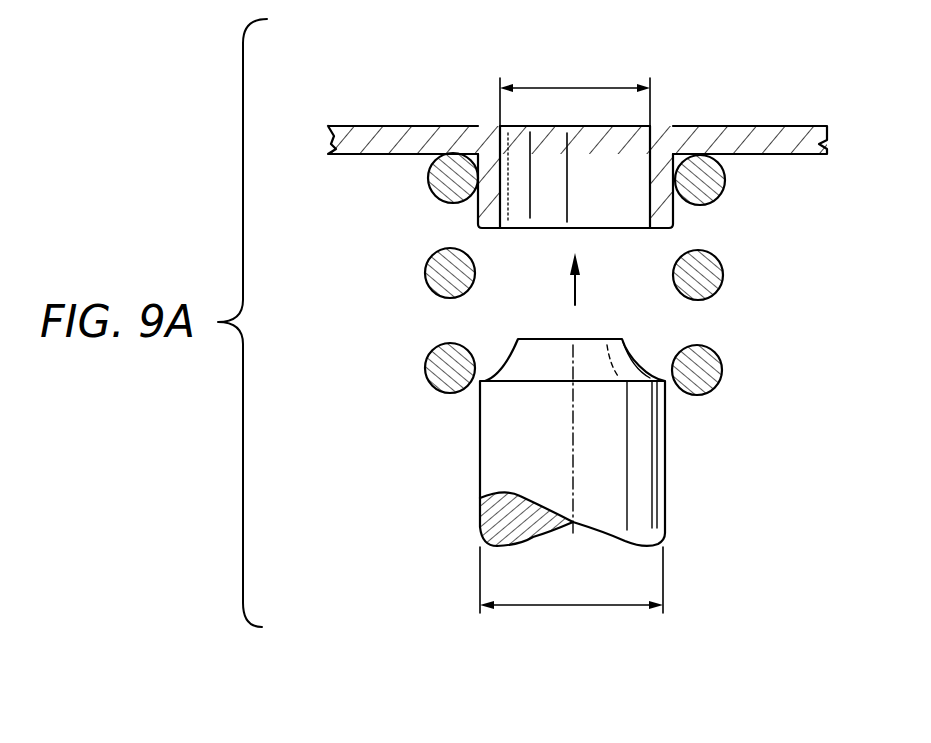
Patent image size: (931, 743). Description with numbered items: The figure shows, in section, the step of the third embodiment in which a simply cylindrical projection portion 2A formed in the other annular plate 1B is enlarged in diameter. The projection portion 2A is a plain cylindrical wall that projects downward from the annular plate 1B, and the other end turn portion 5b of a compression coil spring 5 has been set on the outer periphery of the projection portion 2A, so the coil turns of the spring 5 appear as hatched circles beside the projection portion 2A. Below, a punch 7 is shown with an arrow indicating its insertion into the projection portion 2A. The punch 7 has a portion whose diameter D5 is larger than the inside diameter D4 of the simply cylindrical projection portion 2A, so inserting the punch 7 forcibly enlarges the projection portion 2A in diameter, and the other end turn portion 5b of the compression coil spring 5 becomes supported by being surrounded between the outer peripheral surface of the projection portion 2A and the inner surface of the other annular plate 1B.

The other annular plate 1B is at (380, 124).
The simply cylindrical projection portion 2A is at (603, 158).
The compression coil spring 5 is at (722, 365).
The other end turn portion 5b is at (713, 183).
The punch 7 is at (505, 481).
The inside diameter of the simply cylindrical projection portion D4 is at (575, 90).
The diameter of the punch portion D5 is at (571, 580).